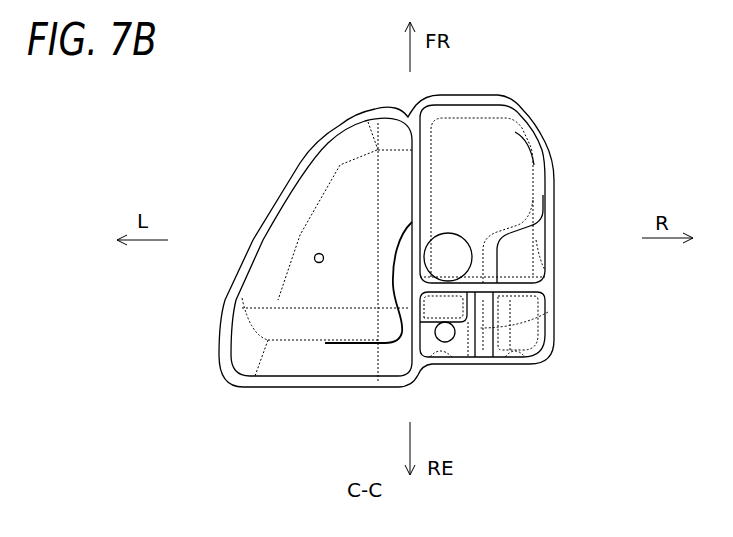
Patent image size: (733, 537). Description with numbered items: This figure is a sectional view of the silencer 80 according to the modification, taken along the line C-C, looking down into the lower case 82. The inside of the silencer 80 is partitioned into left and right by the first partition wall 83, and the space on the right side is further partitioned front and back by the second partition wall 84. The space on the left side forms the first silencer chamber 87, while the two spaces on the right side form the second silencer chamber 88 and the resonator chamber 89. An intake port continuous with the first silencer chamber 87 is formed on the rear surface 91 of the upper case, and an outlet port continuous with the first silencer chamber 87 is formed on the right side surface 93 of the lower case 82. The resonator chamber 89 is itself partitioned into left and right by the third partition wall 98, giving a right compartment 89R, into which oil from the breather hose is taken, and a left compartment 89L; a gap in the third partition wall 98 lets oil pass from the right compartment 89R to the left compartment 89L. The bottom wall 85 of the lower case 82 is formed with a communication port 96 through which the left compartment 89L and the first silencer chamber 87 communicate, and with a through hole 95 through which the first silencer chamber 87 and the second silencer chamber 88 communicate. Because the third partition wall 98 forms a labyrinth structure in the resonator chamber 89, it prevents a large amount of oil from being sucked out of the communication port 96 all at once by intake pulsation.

The silencer 80 is at (252, 120).
The lower case 82 is at (262, 206).
The first partition wall 83 is at (408, 198).
The second partition wall 84 is at (542, 258).
The bottom wall 85 is at (542, 180).
The first silencer chamber 87 is at (348, 231).
The second silencer chamber 88 is at (500, 199).
The resonator chamber 89 is at (545, 428).
The left compartment 89L is at (455, 360).
The right compartment 89R is at (513, 360).
The rear surface 91 is at (307, 387).
The right side surface 93 is at (548, 272).
The through hole 95 is at (444, 231).
The communication port 96 is at (442, 344).
The third partition wall 98 is at (545, 308).